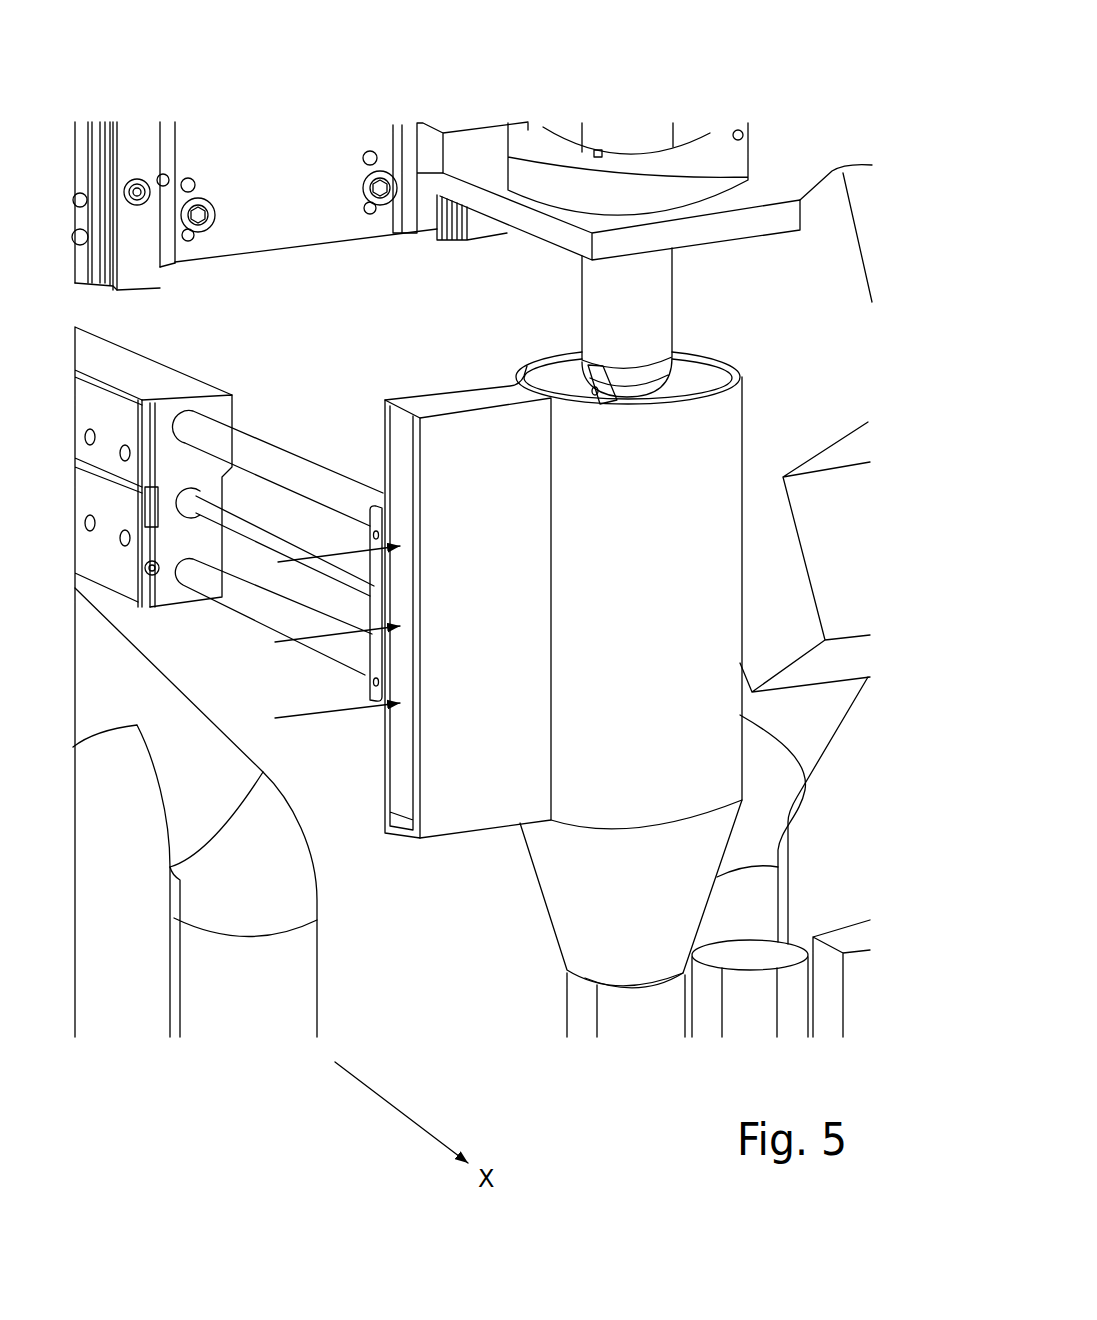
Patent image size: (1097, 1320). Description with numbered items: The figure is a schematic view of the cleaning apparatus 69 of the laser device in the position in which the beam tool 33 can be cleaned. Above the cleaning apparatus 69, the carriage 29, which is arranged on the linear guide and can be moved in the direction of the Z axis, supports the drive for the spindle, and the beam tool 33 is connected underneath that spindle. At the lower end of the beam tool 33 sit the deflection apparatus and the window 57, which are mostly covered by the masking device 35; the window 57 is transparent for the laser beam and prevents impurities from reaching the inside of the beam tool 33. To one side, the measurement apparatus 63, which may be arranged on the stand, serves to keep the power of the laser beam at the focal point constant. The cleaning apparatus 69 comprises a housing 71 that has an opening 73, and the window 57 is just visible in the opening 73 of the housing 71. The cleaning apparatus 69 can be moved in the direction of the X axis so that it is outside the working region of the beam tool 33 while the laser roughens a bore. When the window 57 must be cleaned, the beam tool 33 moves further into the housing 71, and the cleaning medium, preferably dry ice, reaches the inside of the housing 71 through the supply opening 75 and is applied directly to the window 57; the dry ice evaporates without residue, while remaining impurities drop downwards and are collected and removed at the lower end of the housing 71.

The carriage 29 is at (408, 147).
The beam tool 33 is at (640, 317).
The masking device 35 is at (733, 173).
The window 57 is at (582, 362).
The measurement apparatus 63 is at (870, 203).
The cleaning apparatus 69 is at (814, 550).
The housing 71 is at (662, 773).
The opening 73 is at (534, 380).
The supply opening 75 is at (392, 770).